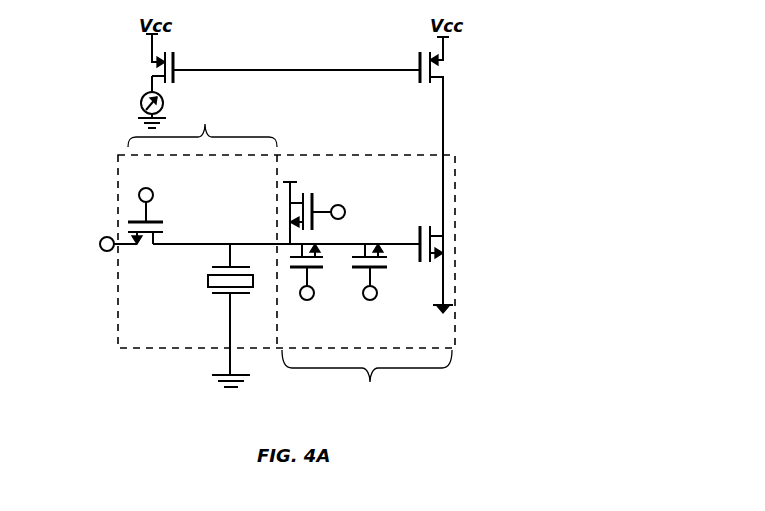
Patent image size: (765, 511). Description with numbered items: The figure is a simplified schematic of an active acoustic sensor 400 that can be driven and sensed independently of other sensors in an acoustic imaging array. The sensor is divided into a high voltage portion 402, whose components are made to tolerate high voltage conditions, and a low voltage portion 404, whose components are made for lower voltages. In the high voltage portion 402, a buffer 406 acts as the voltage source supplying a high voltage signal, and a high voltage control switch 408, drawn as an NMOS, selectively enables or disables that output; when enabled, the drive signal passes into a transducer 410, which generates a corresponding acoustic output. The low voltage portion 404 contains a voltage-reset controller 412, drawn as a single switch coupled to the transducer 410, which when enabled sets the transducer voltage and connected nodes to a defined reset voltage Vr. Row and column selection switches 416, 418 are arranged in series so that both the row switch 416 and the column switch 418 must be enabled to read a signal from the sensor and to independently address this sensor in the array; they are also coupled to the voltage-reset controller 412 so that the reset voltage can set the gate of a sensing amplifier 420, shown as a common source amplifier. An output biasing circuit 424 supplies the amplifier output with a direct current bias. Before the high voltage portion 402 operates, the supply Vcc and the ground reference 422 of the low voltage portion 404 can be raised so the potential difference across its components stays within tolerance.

The active acoustic sensor 400 is at (116, 155).
The high voltage portion 402 is at (202, 220).
The low voltage portion 404 is at (367, 381).
The buffer 406 is at (100, 243).
The high voltage control switch 408 is at (152, 191).
The transducer 410 is at (208, 274).
The voltage-reset controller 412 is at (343, 207).
The row switch 416 is at (370, 300).
The column switch 418 is at (307, 300).
The sensing amplifier 420 is at (445, 207).
The ground reference 422 is at (455, 305).
The output biasing circuit 424 is at (140, 95).